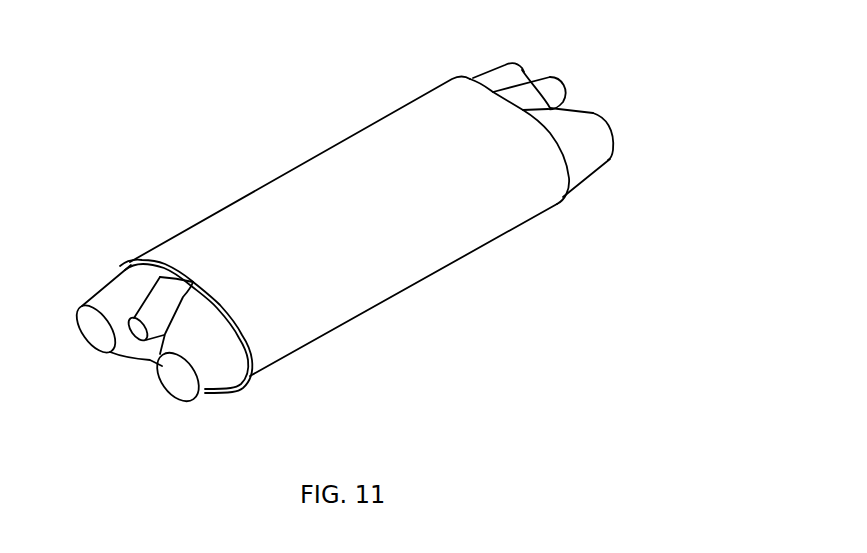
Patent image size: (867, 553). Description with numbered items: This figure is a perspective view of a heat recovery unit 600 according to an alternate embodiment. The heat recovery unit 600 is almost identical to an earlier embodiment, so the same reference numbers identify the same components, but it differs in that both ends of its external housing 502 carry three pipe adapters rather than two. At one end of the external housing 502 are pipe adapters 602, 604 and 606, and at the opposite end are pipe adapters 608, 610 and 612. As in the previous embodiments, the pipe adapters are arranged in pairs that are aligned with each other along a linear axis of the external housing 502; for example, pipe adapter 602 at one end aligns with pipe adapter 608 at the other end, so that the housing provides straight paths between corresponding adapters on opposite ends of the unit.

The heat recovery unit 600 is at (185, 158).
The external housing 502 is at (291, 190).
The pipe adapter 602 is at (118, 288).
The pipe adapter 604 is at (212, 376).
The pipe adapter 606 is at (134, 344).
The pipe adapter 608 is at (503, 73).
The pipe adapter 610 is at (597, 127).
The pipe adapter 612 is at (547, 83).